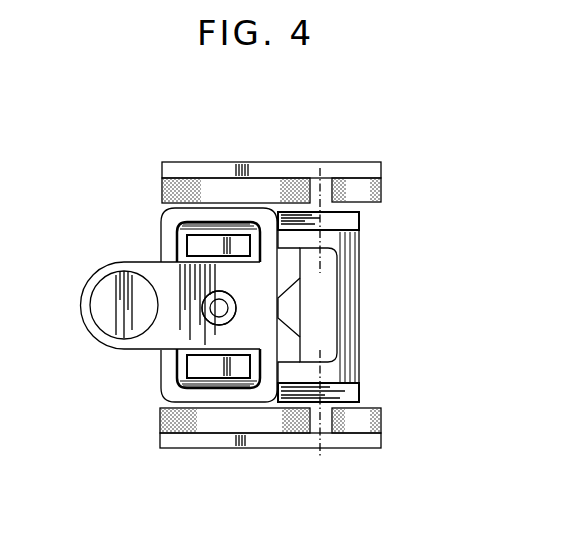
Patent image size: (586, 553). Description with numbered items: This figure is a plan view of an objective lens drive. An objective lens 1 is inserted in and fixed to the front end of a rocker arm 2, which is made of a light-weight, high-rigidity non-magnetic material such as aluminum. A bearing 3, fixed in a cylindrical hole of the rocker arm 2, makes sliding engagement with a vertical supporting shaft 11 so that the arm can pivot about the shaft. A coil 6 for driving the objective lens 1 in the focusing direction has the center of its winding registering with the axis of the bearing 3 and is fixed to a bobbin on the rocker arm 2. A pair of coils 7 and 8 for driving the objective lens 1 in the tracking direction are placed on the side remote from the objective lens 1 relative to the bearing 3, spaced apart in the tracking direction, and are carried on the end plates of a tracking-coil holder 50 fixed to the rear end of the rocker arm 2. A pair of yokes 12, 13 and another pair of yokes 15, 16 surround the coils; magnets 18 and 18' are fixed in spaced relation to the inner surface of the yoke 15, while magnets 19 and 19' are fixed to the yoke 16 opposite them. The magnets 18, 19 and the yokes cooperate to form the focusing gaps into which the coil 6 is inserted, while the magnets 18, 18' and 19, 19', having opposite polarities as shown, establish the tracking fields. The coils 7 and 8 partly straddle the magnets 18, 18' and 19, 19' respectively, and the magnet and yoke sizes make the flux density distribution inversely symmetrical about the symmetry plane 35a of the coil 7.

The objective lens 1 is at (111, 285).
The rocker arm 2 is at (166, 280).
The bearing 3 is at (203, 317).
The coil 6 is at (165, 219).
The coil 7 is at (362, 221).
The coil 8 is at (360, 395).
The supporting shaft 11 is at (222, 302).
The yoke 12 is at (212, 245).
The yoke 13 is at (178, 372).
The yoke 15 is at (303, 170).
The yoke 16 is at (383, 447).
The magnet 18 is at (214, 170).
The magnet 18' is at (386, 186).
The magnet 19 is at (208, 434).
The magnet 19' is at (386, 421).
The symmetry plane 35a is at (324, 190).
The tracking-coil holder 50 is at (358, 296).